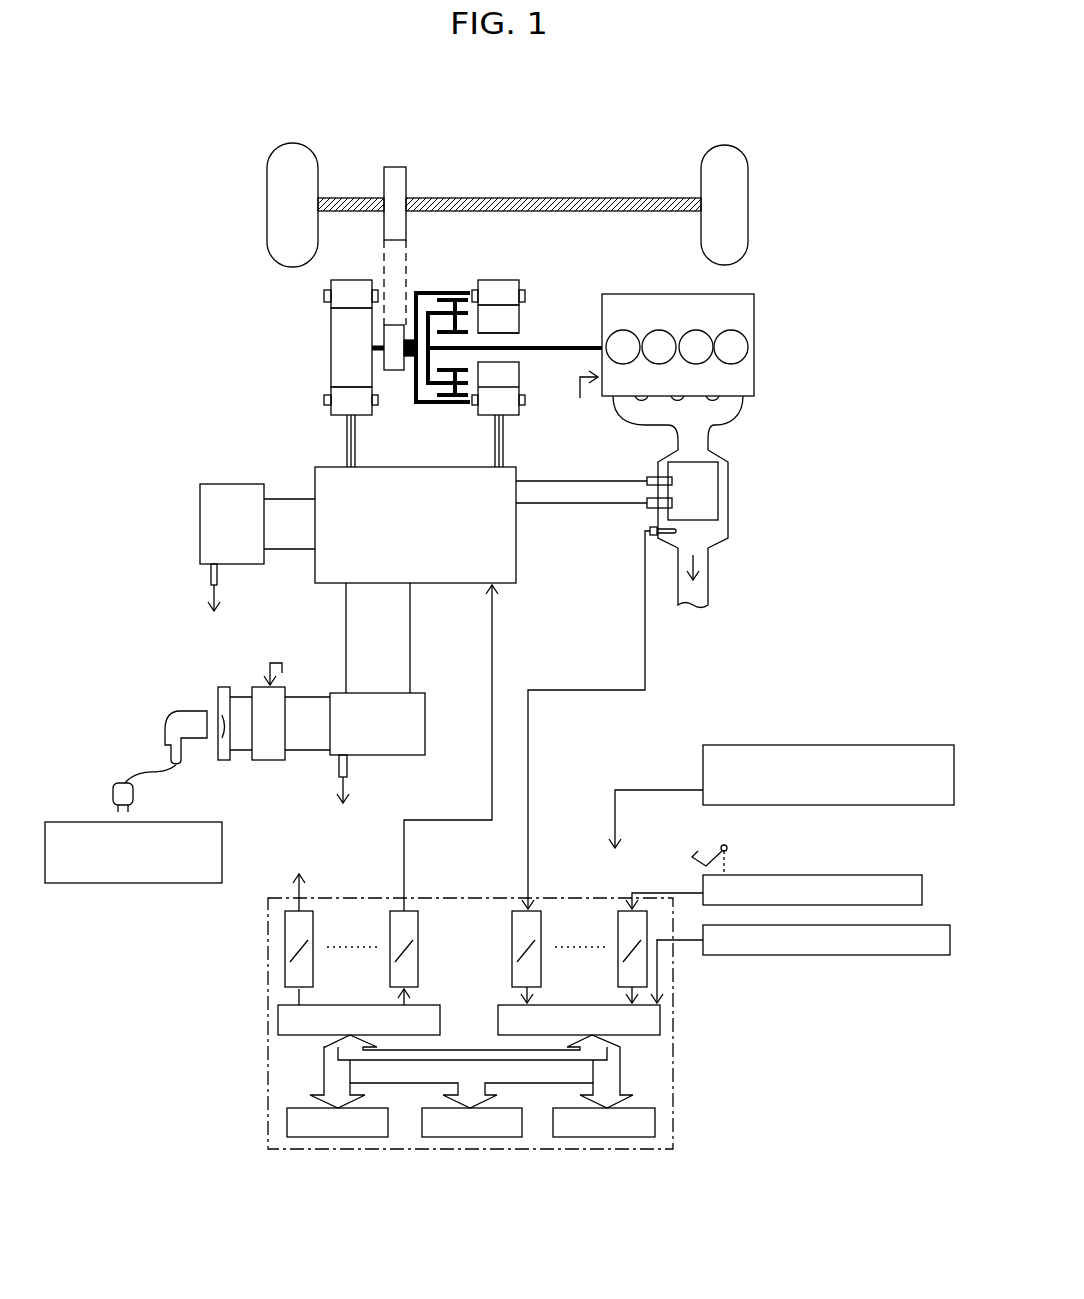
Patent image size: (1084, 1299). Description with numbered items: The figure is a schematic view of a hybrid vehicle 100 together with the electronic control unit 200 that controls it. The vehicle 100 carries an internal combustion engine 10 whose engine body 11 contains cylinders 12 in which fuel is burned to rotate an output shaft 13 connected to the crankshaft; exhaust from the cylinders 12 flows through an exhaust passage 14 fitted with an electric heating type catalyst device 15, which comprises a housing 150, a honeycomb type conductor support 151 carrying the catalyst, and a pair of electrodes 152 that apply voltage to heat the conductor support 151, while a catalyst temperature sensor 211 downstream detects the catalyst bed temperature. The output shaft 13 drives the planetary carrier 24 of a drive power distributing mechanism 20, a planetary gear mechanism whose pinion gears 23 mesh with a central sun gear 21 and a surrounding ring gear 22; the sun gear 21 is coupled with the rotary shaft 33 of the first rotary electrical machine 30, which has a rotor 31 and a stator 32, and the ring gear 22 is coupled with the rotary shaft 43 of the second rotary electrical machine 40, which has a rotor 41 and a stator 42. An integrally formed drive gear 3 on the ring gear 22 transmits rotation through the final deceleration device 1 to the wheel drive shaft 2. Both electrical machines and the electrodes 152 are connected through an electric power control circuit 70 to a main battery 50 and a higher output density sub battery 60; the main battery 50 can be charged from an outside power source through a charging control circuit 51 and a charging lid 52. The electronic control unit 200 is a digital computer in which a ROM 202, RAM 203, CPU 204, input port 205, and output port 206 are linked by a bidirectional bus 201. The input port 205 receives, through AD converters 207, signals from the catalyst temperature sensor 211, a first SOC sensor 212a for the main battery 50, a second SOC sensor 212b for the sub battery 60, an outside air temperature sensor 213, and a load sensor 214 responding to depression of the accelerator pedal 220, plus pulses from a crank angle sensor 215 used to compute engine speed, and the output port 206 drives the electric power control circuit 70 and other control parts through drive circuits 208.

The vehicle 100 is at (252, 126).
The final deceleration device 1 is at (398, 167).
The wheel drive shaft 2 is at (330, 198).
The drive gear 3 is at (396, 371).
The internal combustion engine 10 is at (710, 329).
The engine body 11 is at (745, 321).
The cylinders 12 is at (736, 350).
The output shaft 13 is at (585, 347).
The exhaust passage 14 is at (712, 435).
The electric heating type catalyst device 15 is at (742, 511).
The drive power distributing mechanism 20 is at (474, 307).
The sun gear 21 is at (408, 252).
The ring gear 22 is at (417, 293).
The pinion gears 23 is at (457, 303).
The planetary carrier 24 is at (431, 300).
The first rotary electrical machine 30 is at (557, 347).
The rotor 31 is at (514, 317).
The stator 32 is at (512, 285).
The rotary shaft 33 is at (500, 331).
The second rotary electrical machine 40 is at (293, 373).
The rotor 41 is at (345, 359).
The stator 42 is at (318, 394).
The rotary shaft 43 is at (345, 334).
The main battery 50 is at (425, 720).
The charging control circuit 51 is at (270, 760).
The charging lid 52 is at (225, 760).
The sub battery 60 is at (200, 519).
The electric power control circuit 70 is at (516, 556).
The housing 150 is at (730, 500).
The conductor support 151 is at (720, 470).
The electrodes 152 is at (652, 500).
The electronic control unit 200 is at (467, 878).
The bidirectional bus 201 is at (622, 1073).
The ROM 202 is at (348, 1137).
The RAM 203 is at (495, 1137).
The CPU 204 is at (633, 1137).
The input port 205 is at (505, 1005).
The output port 206 is at (430, 1005).
The AD converters 207 is at (615, 915).
The drive circuits 208 is at (388, 915).
The catalyst temperature sensor 211 is at (655, 537).
The first SOC sensor 212a is at (347, 767).
The second SOC sensor 212b is at (211, 578).
The outside air temperature sensor 213 is at (760, 805).
The load sensor 214 is at (836, 875).
The crank angle sensor 215 is at (906, 925).
The accelerator pedal 220 is at (720, 847).